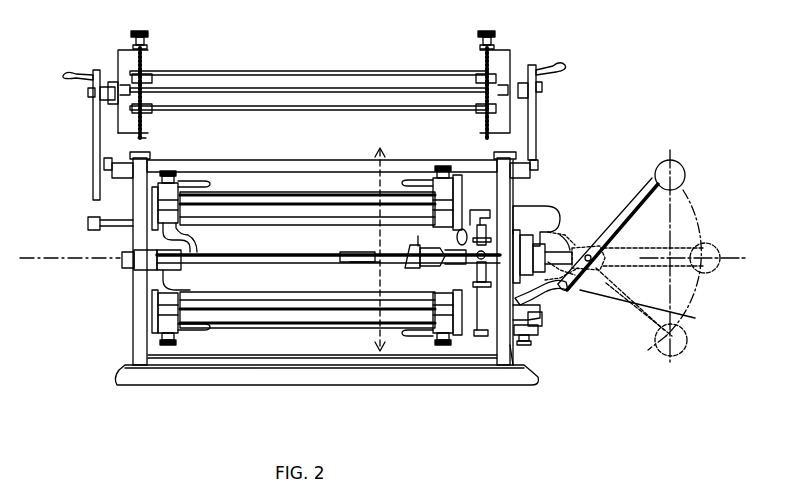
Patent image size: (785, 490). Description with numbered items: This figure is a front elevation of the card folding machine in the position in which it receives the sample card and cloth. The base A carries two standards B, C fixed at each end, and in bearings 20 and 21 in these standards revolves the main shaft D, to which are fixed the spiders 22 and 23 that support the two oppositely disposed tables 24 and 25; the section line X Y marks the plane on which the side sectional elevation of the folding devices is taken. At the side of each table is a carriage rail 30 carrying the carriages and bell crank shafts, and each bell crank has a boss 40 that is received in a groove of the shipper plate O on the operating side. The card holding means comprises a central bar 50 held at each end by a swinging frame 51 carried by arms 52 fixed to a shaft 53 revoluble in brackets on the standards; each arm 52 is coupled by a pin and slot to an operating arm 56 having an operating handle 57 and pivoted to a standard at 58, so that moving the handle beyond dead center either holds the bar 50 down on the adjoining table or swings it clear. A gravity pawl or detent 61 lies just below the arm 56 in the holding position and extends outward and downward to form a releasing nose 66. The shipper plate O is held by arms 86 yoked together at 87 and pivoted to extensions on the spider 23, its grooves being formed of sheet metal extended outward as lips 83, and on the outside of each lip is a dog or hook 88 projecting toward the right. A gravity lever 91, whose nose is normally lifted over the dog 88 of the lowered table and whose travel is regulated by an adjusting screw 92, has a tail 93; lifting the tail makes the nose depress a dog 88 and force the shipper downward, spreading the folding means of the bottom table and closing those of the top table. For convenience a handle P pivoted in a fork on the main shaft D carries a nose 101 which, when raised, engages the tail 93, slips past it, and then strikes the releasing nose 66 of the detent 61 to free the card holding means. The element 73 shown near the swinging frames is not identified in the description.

The base A is at (228, 370).
The standard B is at (145, 313).
The standard C is at (508, 352).
The main shaft D is at (352, 262).
The shipper plate O is at (478, 237).
The handle P is at (650, 200).
The section line X is at (378, 239).
The section line Y is at (378, 340).
The bearing 20 is at (150, 268).
The bearing 21 is at (545, 190).
The spider 22 is at (184, 240).
The spider 23 is at (430, 235).
The table 24 is at (305, 212).
The table 25 is at (310, 310).
The carriage rail 30 is at (165, 325).
The boss 40 is at (465, 295).
The central bar 50 is at (252, 74).
The swinging frame 51 is at (118, 58).
The arm 52 is at (112, 147).
The shaft 53 is at (255, 160).
The operating arm 56 is at (95, 150).
The operating handle 57 is at (65, 80).
The pivot 58 is at (88, 228).
The gravity pawl 61 is at (563, 240).
The releasing nose 66 is at (562, 244).
The adjusting screw 73 is at (146, 34).
The lip 83 is at (485, 210).
The arm 86 is at (433, 256).
The yoke 87 is at (380, 240).
The dog 88 is at (480, 262).
The gravity lever 91 is at (540, 320).
The adjusting screw 92 is at (530, 340).
The tail 93 is at (555, 298).
The nose 101 is at (654, 308).